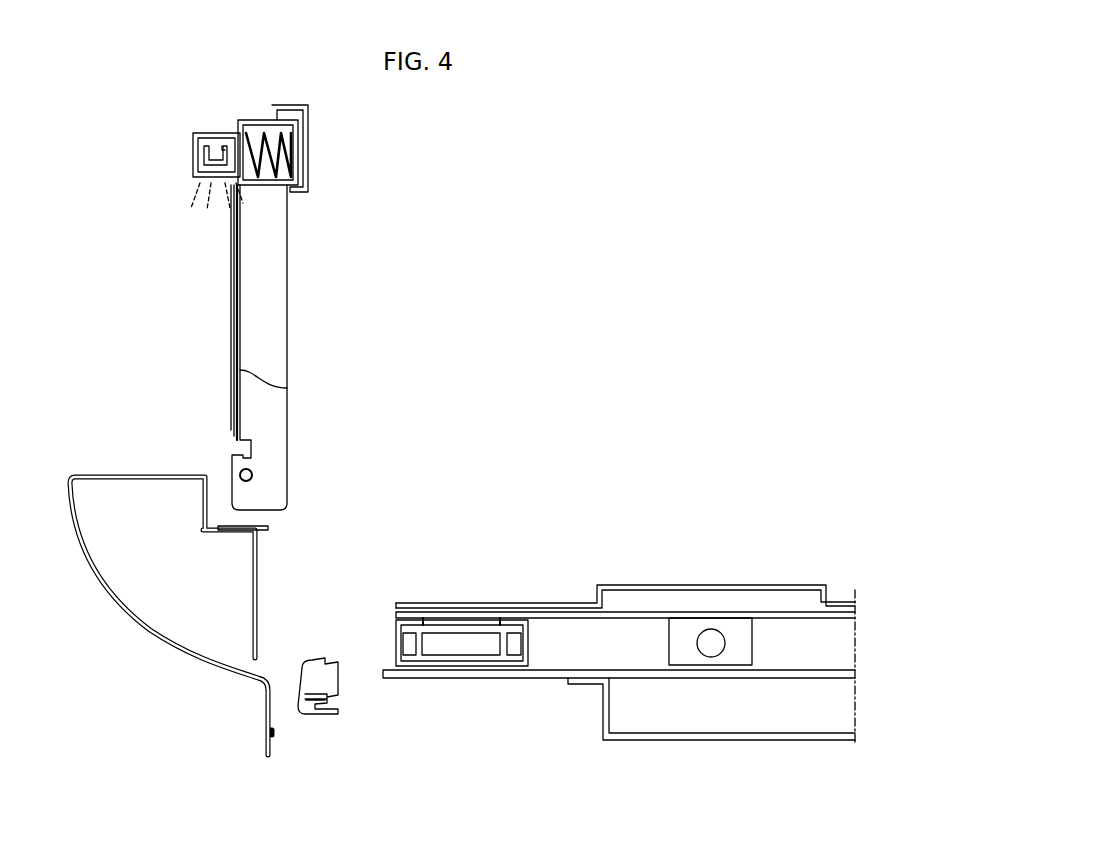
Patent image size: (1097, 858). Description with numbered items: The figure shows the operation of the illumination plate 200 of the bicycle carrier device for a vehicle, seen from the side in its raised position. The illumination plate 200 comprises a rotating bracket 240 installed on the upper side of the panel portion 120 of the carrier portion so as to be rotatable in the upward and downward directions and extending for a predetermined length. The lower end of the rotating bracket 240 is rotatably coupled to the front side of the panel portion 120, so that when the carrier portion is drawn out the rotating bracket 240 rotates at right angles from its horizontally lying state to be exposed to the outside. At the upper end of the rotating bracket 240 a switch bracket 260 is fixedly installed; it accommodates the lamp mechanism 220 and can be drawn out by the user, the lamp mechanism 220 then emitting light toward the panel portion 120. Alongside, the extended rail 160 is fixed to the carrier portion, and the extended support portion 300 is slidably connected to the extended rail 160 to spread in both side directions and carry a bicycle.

The panel portion 120 is at (157, 583).
The extended rail 160 is at (528, 643).
The illumination plate 200 is at (336, 258).
The lamp mechanism 220 is at (210, 147).
The rotating bracket 240 is at (275, 325).
The switch bracket 260 is at (295, 148).
The extended support portion 300 is at (427, 643).